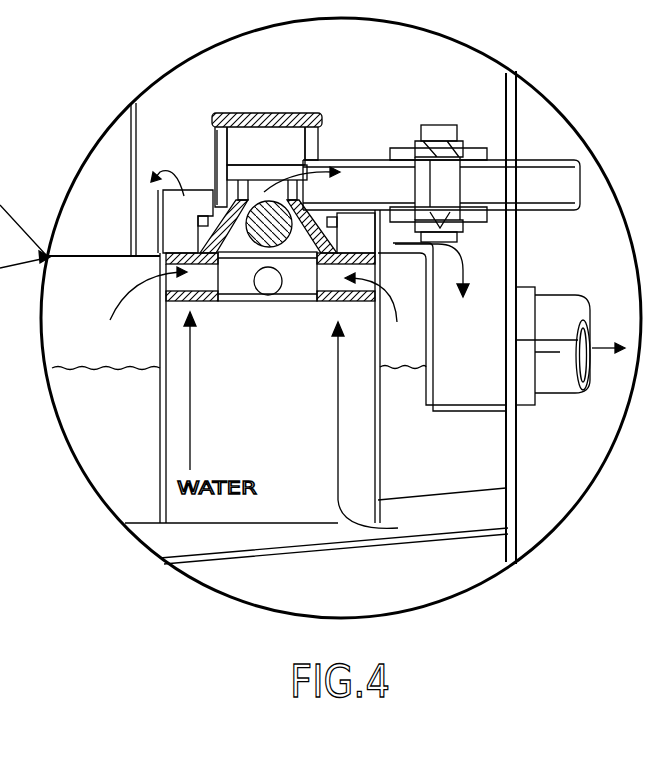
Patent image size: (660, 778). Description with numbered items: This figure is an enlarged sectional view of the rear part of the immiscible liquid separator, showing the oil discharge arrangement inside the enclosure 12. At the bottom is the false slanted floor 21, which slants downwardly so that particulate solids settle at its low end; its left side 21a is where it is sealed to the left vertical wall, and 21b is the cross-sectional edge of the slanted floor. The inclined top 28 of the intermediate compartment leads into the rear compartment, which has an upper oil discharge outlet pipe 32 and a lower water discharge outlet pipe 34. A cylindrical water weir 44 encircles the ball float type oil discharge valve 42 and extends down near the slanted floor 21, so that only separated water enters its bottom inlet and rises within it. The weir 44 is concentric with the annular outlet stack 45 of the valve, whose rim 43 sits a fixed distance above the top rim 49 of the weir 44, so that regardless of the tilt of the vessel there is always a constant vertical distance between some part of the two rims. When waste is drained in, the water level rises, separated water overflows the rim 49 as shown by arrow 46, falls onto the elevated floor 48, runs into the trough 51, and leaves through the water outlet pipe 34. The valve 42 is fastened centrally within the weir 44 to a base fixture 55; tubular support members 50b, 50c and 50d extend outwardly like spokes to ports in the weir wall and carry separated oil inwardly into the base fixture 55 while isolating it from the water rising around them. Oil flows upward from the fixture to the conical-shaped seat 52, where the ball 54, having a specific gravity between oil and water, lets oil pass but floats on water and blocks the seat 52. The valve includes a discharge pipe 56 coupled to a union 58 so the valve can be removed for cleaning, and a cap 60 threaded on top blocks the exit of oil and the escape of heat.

The enclosure 12 is at (518, 543).
The false slanted floor 21 is at (343, 537).
The left side of the false slanted floor 21a is at (422, 496).
The cross-sectional edge of the slanted floor 21b is at (250, 560).
The top of the intermediate compartment 28 is at (66, 255).
The oil discharge outlet pipe 32 is at (531, 158).
The water discharge outlet pipe 34 is at (556, 397).
The oil discharge valve 42 is at (298, 90).
The rim of the annular oil stack 43 is at (236, 182).
The cylindrical water weir 44 is at (158, 203).
The annular outlet stack 45 is at (234, 193).
The arrow 46 is at (190, 213).
The elevated floor 48 is at (397, 322).
The top rim of the cylindrical weir 49 is at (157, 200).
The tubular support member 50b is at (200, 305).
The tubular support member 50c is at (265, 296).
The tubular support member 50d is at (333, 304).
The trough 51 is at (433, 378).
The conical-shaped seat 52 is at (300, 288).
The ball 54 is at (160, 232).
The base fixture 55 is at (322, 212).
The discharge pipe 56 is at (332, 160).
The union 58 is at (445, 125).
The cap 60 is at (246, 112).